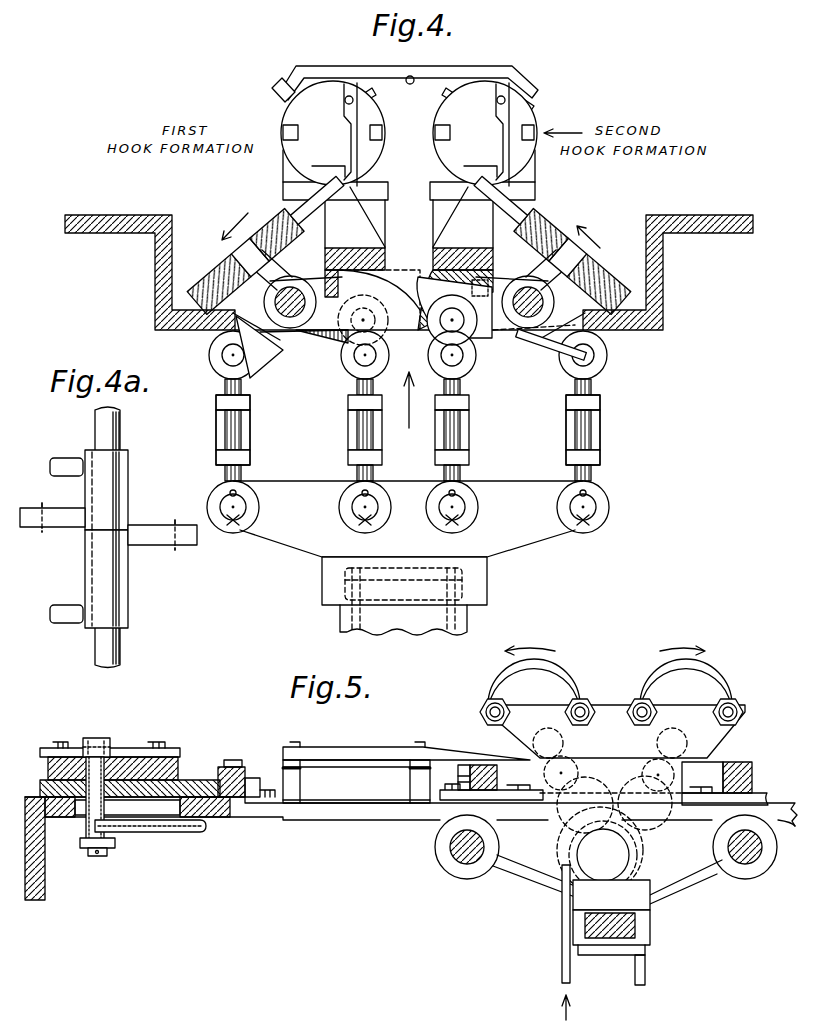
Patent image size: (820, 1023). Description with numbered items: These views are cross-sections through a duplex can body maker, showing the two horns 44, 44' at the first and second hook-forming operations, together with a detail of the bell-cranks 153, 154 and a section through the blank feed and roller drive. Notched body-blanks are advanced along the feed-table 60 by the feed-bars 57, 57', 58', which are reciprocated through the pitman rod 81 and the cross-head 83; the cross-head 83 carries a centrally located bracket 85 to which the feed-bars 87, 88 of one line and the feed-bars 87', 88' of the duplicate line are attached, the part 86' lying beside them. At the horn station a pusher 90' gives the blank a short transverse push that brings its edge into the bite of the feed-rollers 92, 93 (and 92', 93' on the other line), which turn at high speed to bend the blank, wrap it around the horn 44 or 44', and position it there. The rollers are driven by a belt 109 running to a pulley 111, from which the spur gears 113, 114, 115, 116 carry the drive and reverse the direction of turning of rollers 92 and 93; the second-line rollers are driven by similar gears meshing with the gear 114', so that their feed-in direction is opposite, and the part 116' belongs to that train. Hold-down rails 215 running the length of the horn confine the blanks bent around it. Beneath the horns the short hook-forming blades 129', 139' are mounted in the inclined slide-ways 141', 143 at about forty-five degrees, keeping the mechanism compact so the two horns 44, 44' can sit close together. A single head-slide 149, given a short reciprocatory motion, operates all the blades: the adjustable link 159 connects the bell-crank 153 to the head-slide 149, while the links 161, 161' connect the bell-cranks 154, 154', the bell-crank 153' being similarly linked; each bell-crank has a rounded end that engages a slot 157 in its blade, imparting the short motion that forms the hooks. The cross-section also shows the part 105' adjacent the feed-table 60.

In FIG. 4, the hold-down rail 215 is at (283, 86).
In FIG. 4, the horn 44' is at (333, 133).
In FIG. 5, the horn 44' is at (534, 687).
In FIG. 4, the horn 44 is at (485, 133).
In FIG. 5, the horn 44 is at (686, 687).
In FIG. 4, the pin 86' is at (398, 126).
In FIG. 4, the feed-bar 87 is at (421, 143).
In FIG. 5, the feed-bar 87 is at (660, 711).
In FIG. 4, the feed-bar 87' is at (271, 150).
In FIG. 5, the feed-bar 87' is at (470, 712).
In FIG. 4, the feed-bar 88 is at (550, 117).
In FIG. 5, the feed-bar 88 is at (742, 691).
In FIG. 5, the feed-bar 88' is at (562, 711).
In FIG. 4, the slot 157 is at (258, 210).
In FIG. 4, the slide-way 141' is at (324, 208).
In FIG. 4, the slide-way 143 is at (475, 285).
In FIG. 4, the blade 129' is at (240, 261).
In FIG. 4, the blade 139' is at (552, 241).
In FIG. 4, the bell-crank 153' is at (304, 353).
In FIG. 4, the bell-crank 154' is at (259, 424).
In FIG. 4, the bell-crank 153 is at (467, 326).
In FIG. 4A, the bell-crank 153 is at (122, 579).
In FIG. 4, the bell-crank 154 is at (561, 431).
In FIG. 4A, the bell-crank 154 is at (122, 487).
In FIG. 4, the adjustable link 159 is at (384, 432).
In FIG. 4, the link 161' is at (269, 430).
In FIG. 4, the link 161 is at (553, 430).
In FIG. 4, the head-slide 149 is at (527, 538).
In FIG. 5, the pusher 90' is at (130, 755).
In FIG. 5, the feed-bar 57' is at (241, 759).
In FIG. 5, the feed-table 60 is at (180, 826).
In FIG. 5, the shaft 105' is at (180, 840).
In FIG. 5, the cross-head 83 is at (346, 822).
In FIG. 5, the feed-bar 58' is at (488, 782).
In FIG. 5, the bracket 85 is at (608, 704).
In FIG. 5, the dashed roller 116' is at (557, 777).
In FIG. 5, the spur gear 116 is at (682, 758).
In FIG. 5, the feed-roller 92' is at (573, 759).
In FIG. 5, the feed-roller 92 is at (652, 779).
In FIG. 5, the feed-roller 93' is at (588, 761).
In FIG. 5, the feed-roller 93 is at (634, 771).
In FIG. 5, the spur gear 115 is at (725, 783).
In FIG. 5, the feed-bar 57 is at (753, 763).
In FIG. 5, the spur gear 113 is at (580, 866).
In FIG. 5, the gear 114' is at (543, 845).
In FIG. 5, the spur gear 114 is at (679, 830).
In FIG. 5, the pulley 111 is at (640, 868).
In FIG. 5, the pitman rod 81 is at (620, 936).
In FIG. 5, the belt 109 is at (564, 933).